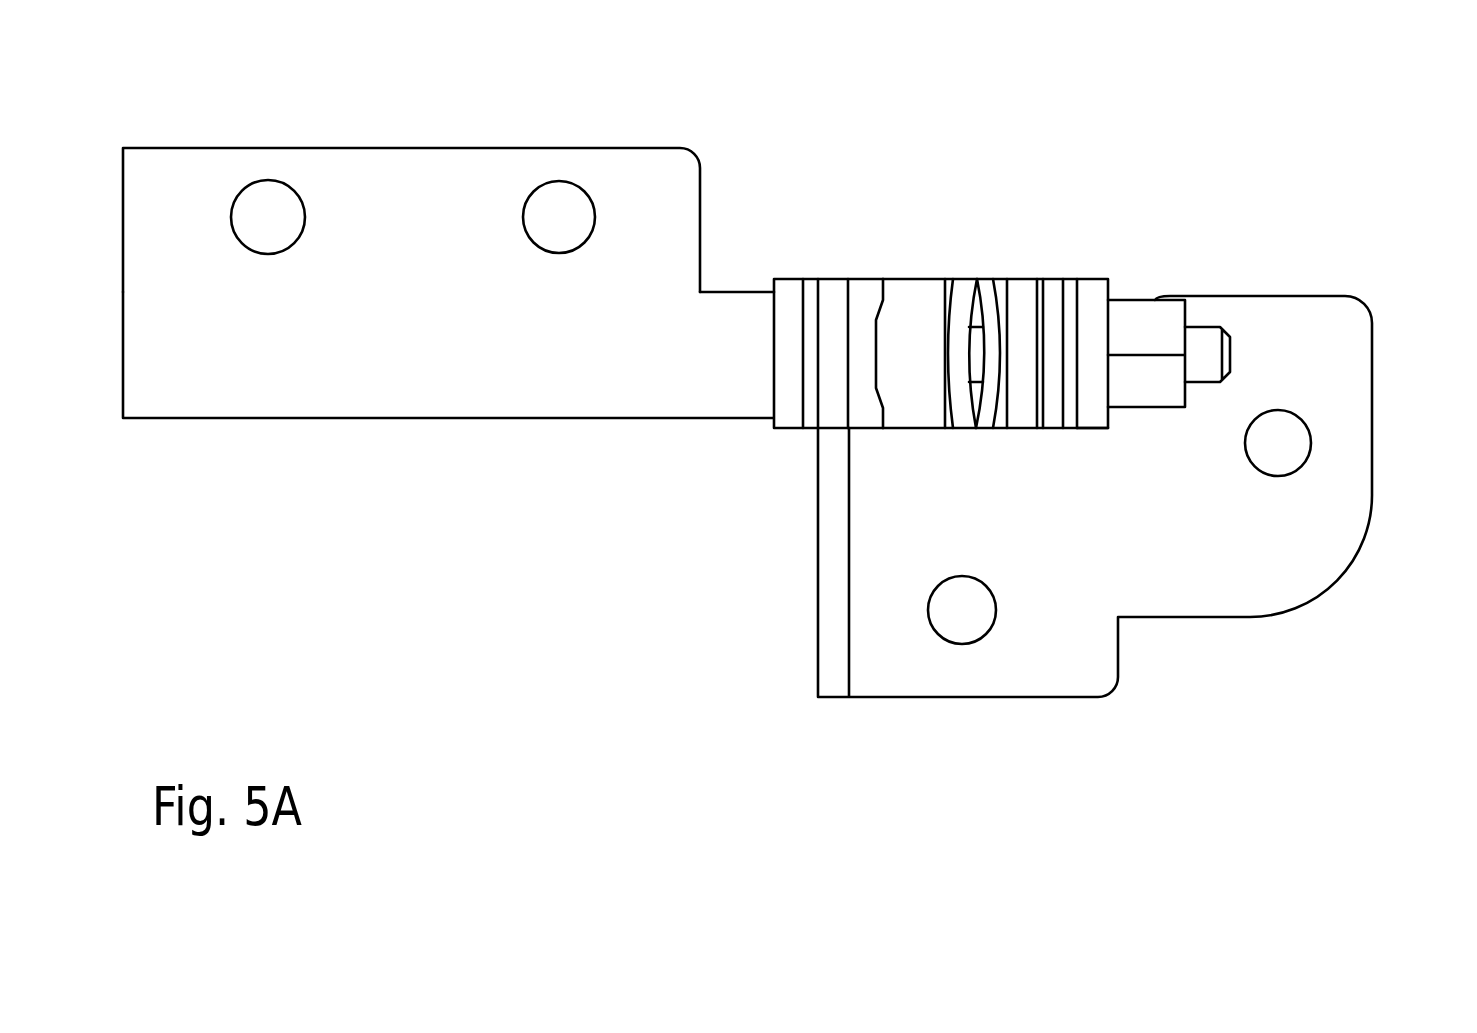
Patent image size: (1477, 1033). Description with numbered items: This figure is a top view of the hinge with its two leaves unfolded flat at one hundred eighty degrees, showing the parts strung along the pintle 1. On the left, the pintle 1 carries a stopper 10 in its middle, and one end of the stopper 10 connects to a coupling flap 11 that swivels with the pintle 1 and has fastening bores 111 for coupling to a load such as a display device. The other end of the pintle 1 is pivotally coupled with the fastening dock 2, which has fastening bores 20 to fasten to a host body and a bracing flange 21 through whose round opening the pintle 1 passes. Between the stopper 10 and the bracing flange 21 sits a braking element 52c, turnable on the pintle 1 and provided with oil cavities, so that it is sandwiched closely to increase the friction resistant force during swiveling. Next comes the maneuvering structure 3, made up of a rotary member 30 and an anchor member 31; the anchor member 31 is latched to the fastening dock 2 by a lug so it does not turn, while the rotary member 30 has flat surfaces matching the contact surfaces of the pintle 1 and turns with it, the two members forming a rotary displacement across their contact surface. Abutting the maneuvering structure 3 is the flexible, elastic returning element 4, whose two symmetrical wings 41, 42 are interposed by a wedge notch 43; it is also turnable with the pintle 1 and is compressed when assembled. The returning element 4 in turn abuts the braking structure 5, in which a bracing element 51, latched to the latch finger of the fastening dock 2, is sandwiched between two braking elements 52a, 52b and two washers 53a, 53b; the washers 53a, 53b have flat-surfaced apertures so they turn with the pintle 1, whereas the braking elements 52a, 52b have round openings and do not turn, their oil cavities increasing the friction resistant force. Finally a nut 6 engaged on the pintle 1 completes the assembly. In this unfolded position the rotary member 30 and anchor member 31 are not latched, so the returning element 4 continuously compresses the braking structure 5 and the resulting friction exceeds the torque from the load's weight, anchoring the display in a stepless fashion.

The pintle 1 is at (1213, 320).
The fastening dock 2 is at (1372, 405).
The maneuvering structure 3 is at (890, 437).
The returning element 4 is at (976, 339).
The braking structure 5 is at (1083, 347).
The nut 6 is at (1135, 318).
The stopper 10 is at (793, 295).
The coupling flap 11 is at (412, 173).
The fastening bores 111 is at (556, 211).
The fastening bores 20 is at (967, 632).
The bracing flange 21 is at (836, 295).
The rotary member 30 is at (912, 290).
The anchor member 31 is at (865, 292).
The wing 41 is at (987, 280).
The wing 42 is at (968, 290).
The wedge notch 43 is at (965, 432).
The bracing element 51 is at (1052, 287).
The braking element 52a is at (1038, 290).
The braking element 52b is at (1072, 432).
The braking element 52c is at (813, 292).
The washer 53a is at (1022, 285).
The washer 53b is at (1097, 432).